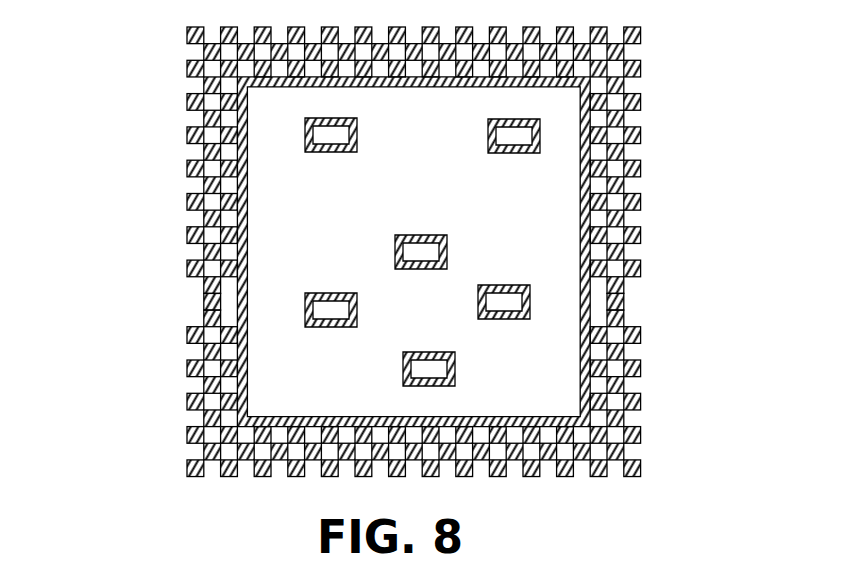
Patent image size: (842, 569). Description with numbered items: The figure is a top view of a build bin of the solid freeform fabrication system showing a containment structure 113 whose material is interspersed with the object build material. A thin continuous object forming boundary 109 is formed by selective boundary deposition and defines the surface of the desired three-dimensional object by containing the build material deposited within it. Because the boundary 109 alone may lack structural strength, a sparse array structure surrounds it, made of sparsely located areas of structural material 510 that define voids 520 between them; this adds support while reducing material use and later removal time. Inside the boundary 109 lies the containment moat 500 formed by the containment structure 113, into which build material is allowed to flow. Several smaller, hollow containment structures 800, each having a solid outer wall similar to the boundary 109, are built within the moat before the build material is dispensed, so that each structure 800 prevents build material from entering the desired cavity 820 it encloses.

The containment moat 500 is at (398, 252).
The sparsely located areas of structural material 510 is at (188, 234).
The voids 520 is at (213, 300).
The smaller hollow containment structure 800 is at (290, 222).
The cavity 820 is at (332, 135).
The continuous object forming boundary 109 is at (582, 390).
The containment structure 113 is at (593, 252).